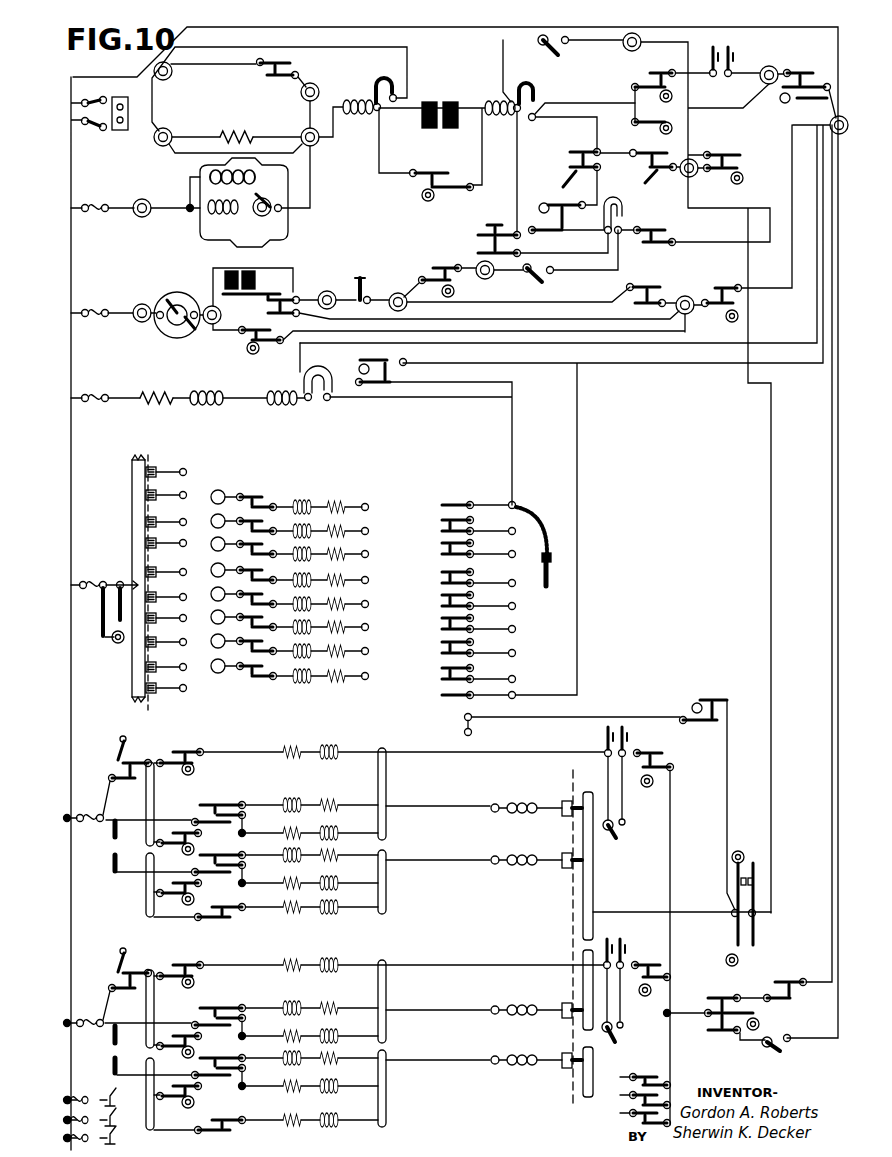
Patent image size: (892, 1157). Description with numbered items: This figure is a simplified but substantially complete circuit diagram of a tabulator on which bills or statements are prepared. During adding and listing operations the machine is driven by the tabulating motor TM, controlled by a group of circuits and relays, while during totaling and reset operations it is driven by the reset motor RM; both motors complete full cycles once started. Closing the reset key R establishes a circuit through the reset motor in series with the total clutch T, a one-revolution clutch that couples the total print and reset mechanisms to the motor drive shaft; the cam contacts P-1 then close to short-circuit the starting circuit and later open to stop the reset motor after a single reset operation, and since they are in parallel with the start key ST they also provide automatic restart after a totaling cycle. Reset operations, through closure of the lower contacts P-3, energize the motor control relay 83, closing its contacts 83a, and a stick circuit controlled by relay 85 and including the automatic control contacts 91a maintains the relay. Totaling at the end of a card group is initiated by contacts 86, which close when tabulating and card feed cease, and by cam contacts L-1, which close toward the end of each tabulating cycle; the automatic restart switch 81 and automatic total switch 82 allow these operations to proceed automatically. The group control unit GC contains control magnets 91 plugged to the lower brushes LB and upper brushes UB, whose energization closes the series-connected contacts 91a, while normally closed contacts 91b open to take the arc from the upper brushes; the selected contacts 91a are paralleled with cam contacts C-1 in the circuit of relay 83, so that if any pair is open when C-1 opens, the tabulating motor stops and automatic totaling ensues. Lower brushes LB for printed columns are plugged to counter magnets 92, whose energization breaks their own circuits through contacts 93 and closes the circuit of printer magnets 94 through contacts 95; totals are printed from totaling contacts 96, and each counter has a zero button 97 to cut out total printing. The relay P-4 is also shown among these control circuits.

The automatic restart switch 81 is at (556, 278).
The automatic total switch 82 is at (589, 56).
The motor control relay 83 is at (207, 406).
The contacts of motor control relay 83a is at (636, 210).
The relay 85 is at (279, 406).
The contacts 86 is at (366, 280).
The control magnets 91 is at (290, 594).
The automatic control contacts 91a is at (445, 683).
The contacts 91b is at (299, 682).
The counter magnets 92 is at (288, 918).
The contacts 93 is at (190, 805).
The printer magnets 94 is at (330, 915).
The contacts 95 is at (216, 837).
The totaling contacts 96 is at (172, 752).
The zero button 97 is at (116, 758).
The tabulating motor TM is at (244, 202).
The reset motor RM is at (177, 324).
The total clutch T is at (257, 272).
The cam contacts P-1 is at (261, 348).
The lower contacts P-3 is at (804, 100).
The relay P-4 is at (687, 174).
The start key ST is at (480, 241).
The cam contacts L-1 is at (441, 286).
The reset key R is at (684, 300).
The cam contacts C-1 is at (388, 380).
The upper brushes UB is at (129, 582).
The group control unit GC is at (290, 594).
The lower brushes LB is at (503, 938).